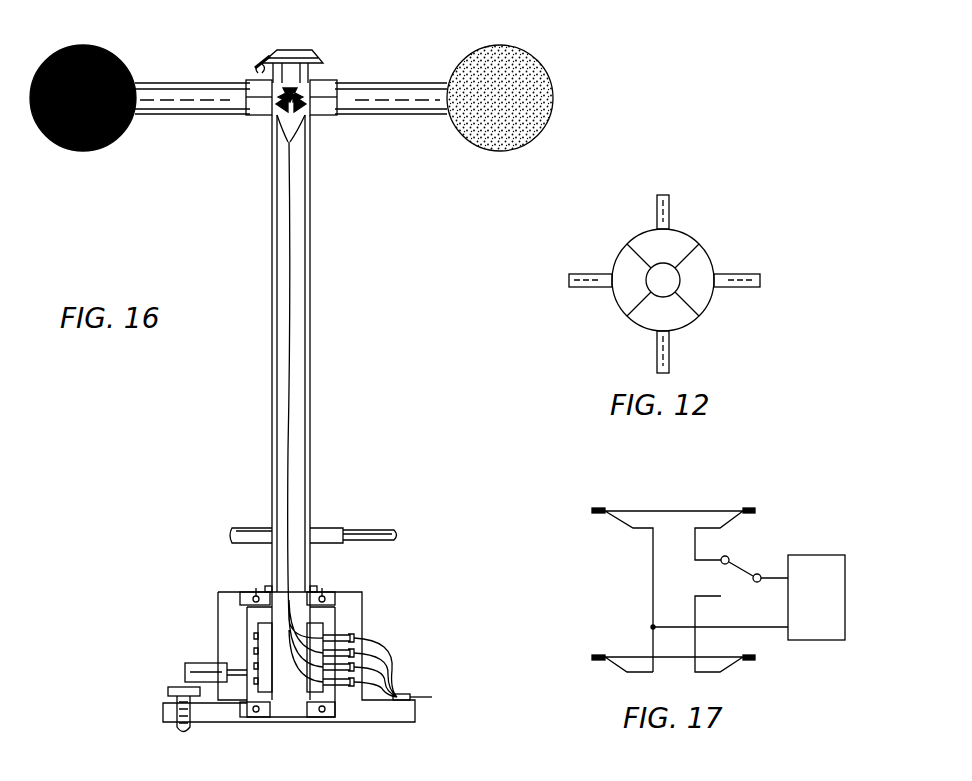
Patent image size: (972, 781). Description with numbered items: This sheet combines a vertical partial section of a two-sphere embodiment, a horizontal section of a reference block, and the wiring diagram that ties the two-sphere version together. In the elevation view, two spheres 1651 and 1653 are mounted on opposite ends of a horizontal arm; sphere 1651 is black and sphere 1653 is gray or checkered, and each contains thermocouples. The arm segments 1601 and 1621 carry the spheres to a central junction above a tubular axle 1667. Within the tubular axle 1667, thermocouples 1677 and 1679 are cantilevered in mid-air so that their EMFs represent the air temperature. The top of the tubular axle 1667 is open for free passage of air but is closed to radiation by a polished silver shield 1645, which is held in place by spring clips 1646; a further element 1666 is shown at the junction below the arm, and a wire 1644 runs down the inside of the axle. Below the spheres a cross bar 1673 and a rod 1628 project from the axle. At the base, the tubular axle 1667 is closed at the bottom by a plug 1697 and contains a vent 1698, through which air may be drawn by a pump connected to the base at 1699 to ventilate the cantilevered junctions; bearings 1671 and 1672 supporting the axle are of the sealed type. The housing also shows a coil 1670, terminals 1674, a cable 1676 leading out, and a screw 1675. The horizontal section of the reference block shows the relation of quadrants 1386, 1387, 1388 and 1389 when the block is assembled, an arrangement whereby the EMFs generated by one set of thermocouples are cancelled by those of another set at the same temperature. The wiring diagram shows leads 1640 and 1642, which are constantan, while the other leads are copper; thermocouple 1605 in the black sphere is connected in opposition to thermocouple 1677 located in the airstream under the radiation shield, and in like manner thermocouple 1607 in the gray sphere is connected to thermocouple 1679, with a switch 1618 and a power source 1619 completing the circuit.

In FIG. 16, the black sphere 1651 is at (93, 44).
In FIG. 16, the gray or checkered sphere 1653 is at (508, 47).
In FIG. 16, the left arm tube 1601 is at (252, 114).
In FIG. 16, the right arm tube 1621 is at (330, 86).
In FIG. 16, the polished silver shield 1645 is at (301, 48).
In FIG. 16, the thermocouple 1677 is at (293, 92).
In FIG. 17, the thermocouple 1677 is at (752, 508).
In FIG. 16, the thermocouple 1679 is at (305, 79).
In FIG. 17, the thermocouple 1679 is at (750, 662).
In FIG. 16, the spring clips 1646 is at (256, 67).
In FIG. 16, the lower contact 1666 is at (313, 105).
In FIG. 16, the tubular axle 1667 is at (310, 251).
In FIG. 16, the conductor wire 1644 is at (289, 203).
In FIG. 16, the cross bar 1673 is at (250, 526).
In FIG. 16, the rod 1628 is at (375, 529).
In FIG. 16, the plug 1697 is at (285, 716).
In FIG. 16, the vent 1698 is at (268, 617).
In FIG. 16, the bearing 1671 is at (328, 595).
In FIG. 16, the bearing 1672 is at (338, 712).
In FIG. 16, the coil 1670 is at (256, 636).
In FIG. 16, the terminals 1674 is at (337, 638).
In FIG. 16, the cable 1676 is at (426, 697).
In FIG. 16, the pump connection on base 1699 is at (185, 668).
In FIG. 16, the screw 1675 is at (163, 712).
In FIG. 12, the quadrant 1386 is at (700, 259).
In FIG. 12, the quadrant 1387 is at (648, 238).
In FIG. 12, the quadrant 1388 is at (622, 300).
In FIG. 12, the quadrant 1389 is at (680, 318).
In FIG. 17, the thermocouple 1605 is at (597, 508).
In FIG. 17, the thermocouple 1607 is at (597, 662).
In FIG. 17, the lead 1640 is at (663, 511).
In FIG. 17, the lead 1642 is at (628, 655).
In FIG. 17, the switch 1618 is at (731, 563).
In FIG. 17, the power source 1619 is at (817, 597).